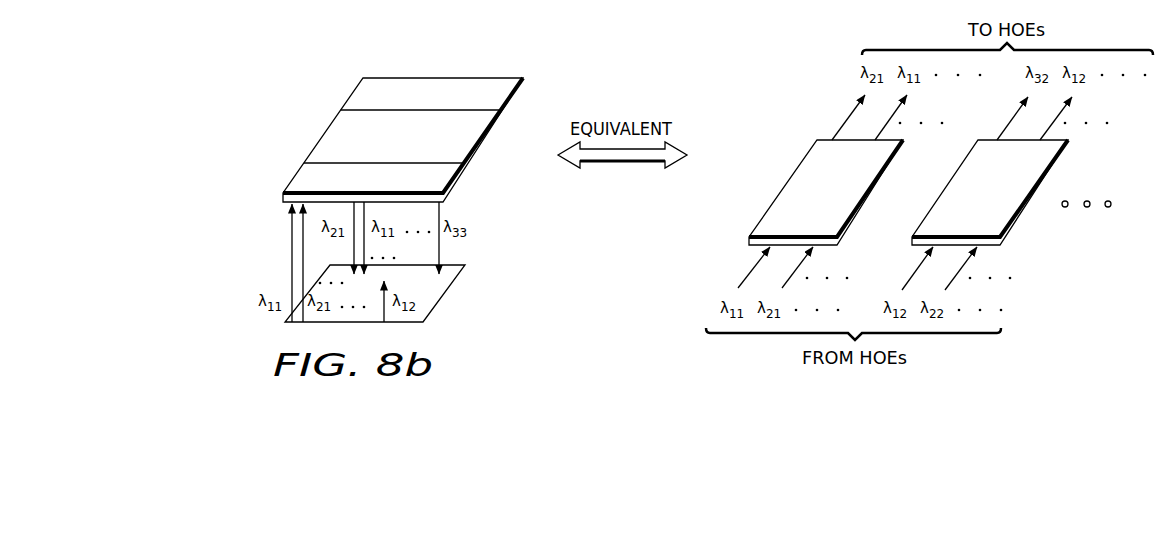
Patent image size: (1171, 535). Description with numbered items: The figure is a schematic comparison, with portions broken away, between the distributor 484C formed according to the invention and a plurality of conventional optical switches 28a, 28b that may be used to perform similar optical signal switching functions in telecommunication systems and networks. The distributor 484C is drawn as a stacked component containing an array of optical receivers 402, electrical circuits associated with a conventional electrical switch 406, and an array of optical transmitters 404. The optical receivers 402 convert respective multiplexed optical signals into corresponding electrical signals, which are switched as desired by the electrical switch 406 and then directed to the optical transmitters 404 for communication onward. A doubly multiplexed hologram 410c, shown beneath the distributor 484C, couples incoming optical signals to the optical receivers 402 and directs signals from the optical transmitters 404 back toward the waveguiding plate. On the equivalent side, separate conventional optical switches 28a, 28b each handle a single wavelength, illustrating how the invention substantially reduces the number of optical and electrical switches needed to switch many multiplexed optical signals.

The distributor 484C is at (442, 76).
The array of optical transmitters 404 is at (356, 94).
The electrical switch 406 is at (334, 132).
The array of optical receivers 402 is at (301, 177).
The doubly multiplexed hologram 410c is at (442, 297).
The conventional optical switch 28a is at (772, 217).
The conventional optical switch 28b is at (1033, 165).